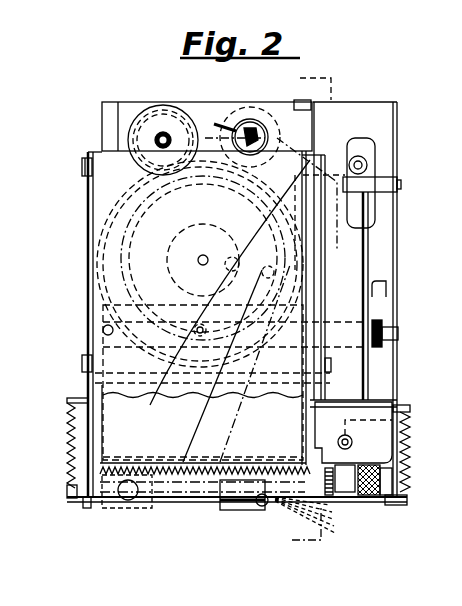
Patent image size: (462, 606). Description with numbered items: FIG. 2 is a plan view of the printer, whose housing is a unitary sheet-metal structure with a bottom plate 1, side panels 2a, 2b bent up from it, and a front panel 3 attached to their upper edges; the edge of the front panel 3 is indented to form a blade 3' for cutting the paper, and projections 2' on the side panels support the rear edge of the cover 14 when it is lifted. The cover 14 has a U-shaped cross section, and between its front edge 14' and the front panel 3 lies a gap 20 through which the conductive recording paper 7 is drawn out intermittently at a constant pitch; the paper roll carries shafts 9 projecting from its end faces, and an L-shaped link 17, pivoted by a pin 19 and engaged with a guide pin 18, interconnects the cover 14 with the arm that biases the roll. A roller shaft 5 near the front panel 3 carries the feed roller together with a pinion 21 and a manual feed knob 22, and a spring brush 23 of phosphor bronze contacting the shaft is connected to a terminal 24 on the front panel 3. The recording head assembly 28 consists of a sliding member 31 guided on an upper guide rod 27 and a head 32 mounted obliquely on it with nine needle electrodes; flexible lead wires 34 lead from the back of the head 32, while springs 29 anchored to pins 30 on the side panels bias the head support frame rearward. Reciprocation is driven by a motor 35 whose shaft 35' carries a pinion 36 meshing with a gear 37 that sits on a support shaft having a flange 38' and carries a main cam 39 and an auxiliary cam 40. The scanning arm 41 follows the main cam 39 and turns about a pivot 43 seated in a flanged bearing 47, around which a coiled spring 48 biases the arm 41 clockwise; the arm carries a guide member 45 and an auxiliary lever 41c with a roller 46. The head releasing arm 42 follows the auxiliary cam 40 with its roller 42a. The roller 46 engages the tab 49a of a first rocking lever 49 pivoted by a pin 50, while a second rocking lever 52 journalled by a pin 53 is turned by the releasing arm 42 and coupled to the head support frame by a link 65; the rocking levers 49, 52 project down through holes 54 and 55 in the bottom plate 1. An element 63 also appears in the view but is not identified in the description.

The bottom plate 1 is at (357, 102).
The side panel 2a is at (102, 128).
The projections 2' is at (206, 103).
The side panel 2b is at (320, 100).
The front panel 3 is at (127, 510).
The blade 3' is at (162, 524).
The roller shaft 5 is at (393, 480).
The recording paper 7 is at (105, 435).
The shafts 9 is at (90, 383).
The cover 14 is at (186, 382).
The front edge 14' is at (232, 320).
The link 17 is at (88, 251).
The guide pin 18 is at (82, 366).
The pin 19 is at (82, 166).
The gap 20 is at (380, 232).
The pinion 21 is at (328, 447).
The manual feed knob 22 is at (392, 505).
The spring brush 23 is at (372, 498).
The terminal 24 is at (352, 442).
The upper guide rod 27 is at (190, 505).
The recording head assembly 28 is at (245, 590).
The springs 29 is at (66, 458).
The pins 30 is at (67, 405).
The sliding member 31 is at (232, 515).
The head 32 is at (248, 515).
The lead wires 34 is at (345, 522).
The motor 35 is at (163, 122).
The motor shaft 35' is at (174, 110).
The pinion 36 is at (183, 114).
The gear 37 is at (110, 225).
The flange 38' is at (141, 269).
The main cam 39 is at (103, 196).
The auxiliary cam 40 is at (172, 258).
The scanning arm 41 is at (352, 280).
The auxiliary lever 41c is at (375, 152).
The head releasing arm 42 is at (140, 375).
The roller 42a is at (200, 405).
The pivot 43 is at (265, 160).
The guide member 45 is at (262, 512).
The roller 46 is at (370, 167).
The flanged cylindrical bearing 47 is at (247, 118).
The coiled spring 48 is at (251, 124).
The first rocking lever 49 is at (376, 205).
The tab 49a is at (356, 228).
The pin 50 is at (398, 186).
The second rocking lever 52 is at (382, 325).
The pin 53 is at (398, 340).
The hole 54 is at (368, 262).
The hole 55 is at (386, 293).
The bracket 63 is at (364, 345).
The link 65 is at (372, 376).